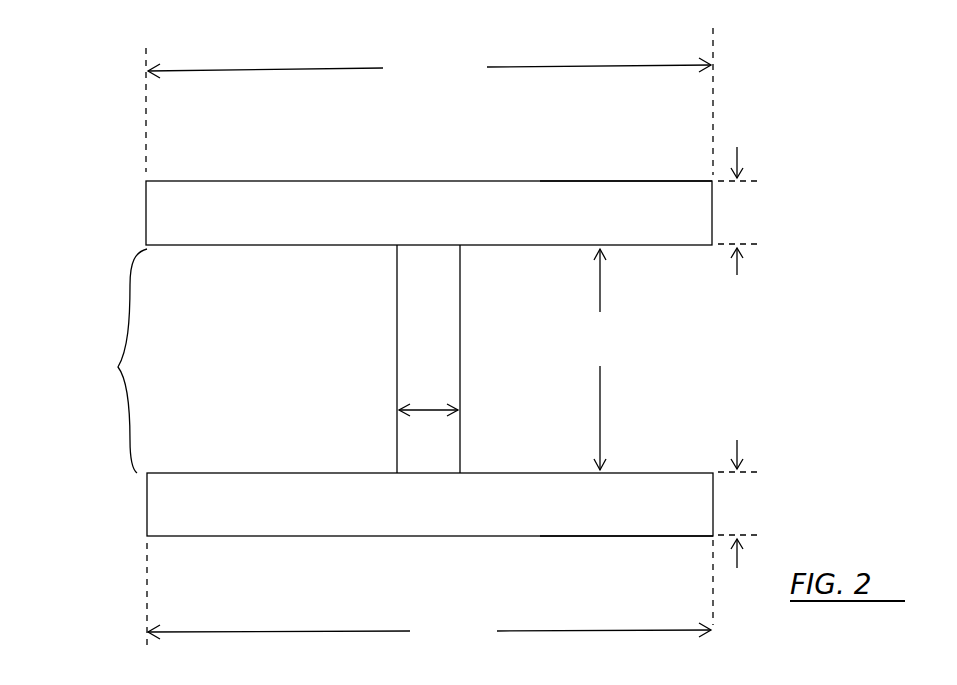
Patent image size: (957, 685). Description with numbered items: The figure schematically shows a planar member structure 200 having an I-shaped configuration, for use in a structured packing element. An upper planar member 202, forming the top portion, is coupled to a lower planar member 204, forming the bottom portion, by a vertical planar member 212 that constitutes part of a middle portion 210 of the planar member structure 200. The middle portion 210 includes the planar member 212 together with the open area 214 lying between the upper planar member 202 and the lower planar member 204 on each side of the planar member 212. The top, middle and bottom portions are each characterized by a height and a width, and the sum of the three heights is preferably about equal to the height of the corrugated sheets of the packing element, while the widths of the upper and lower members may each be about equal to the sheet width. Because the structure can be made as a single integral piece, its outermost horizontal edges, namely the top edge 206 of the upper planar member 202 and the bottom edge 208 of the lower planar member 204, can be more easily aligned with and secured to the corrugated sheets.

The planar member structure 200 is at (852, 370).
The upper planar member 202 is at (452, 196).
The lower planar member 204 is at (270, 518).
The top edge 206 is at (612, 180).
The bottom edge 208 is at (621, 538).
The middle portion 210 is at (94, 361).
The planar member 212 is at (450, 362).
The open area 214 is at (300, 370).